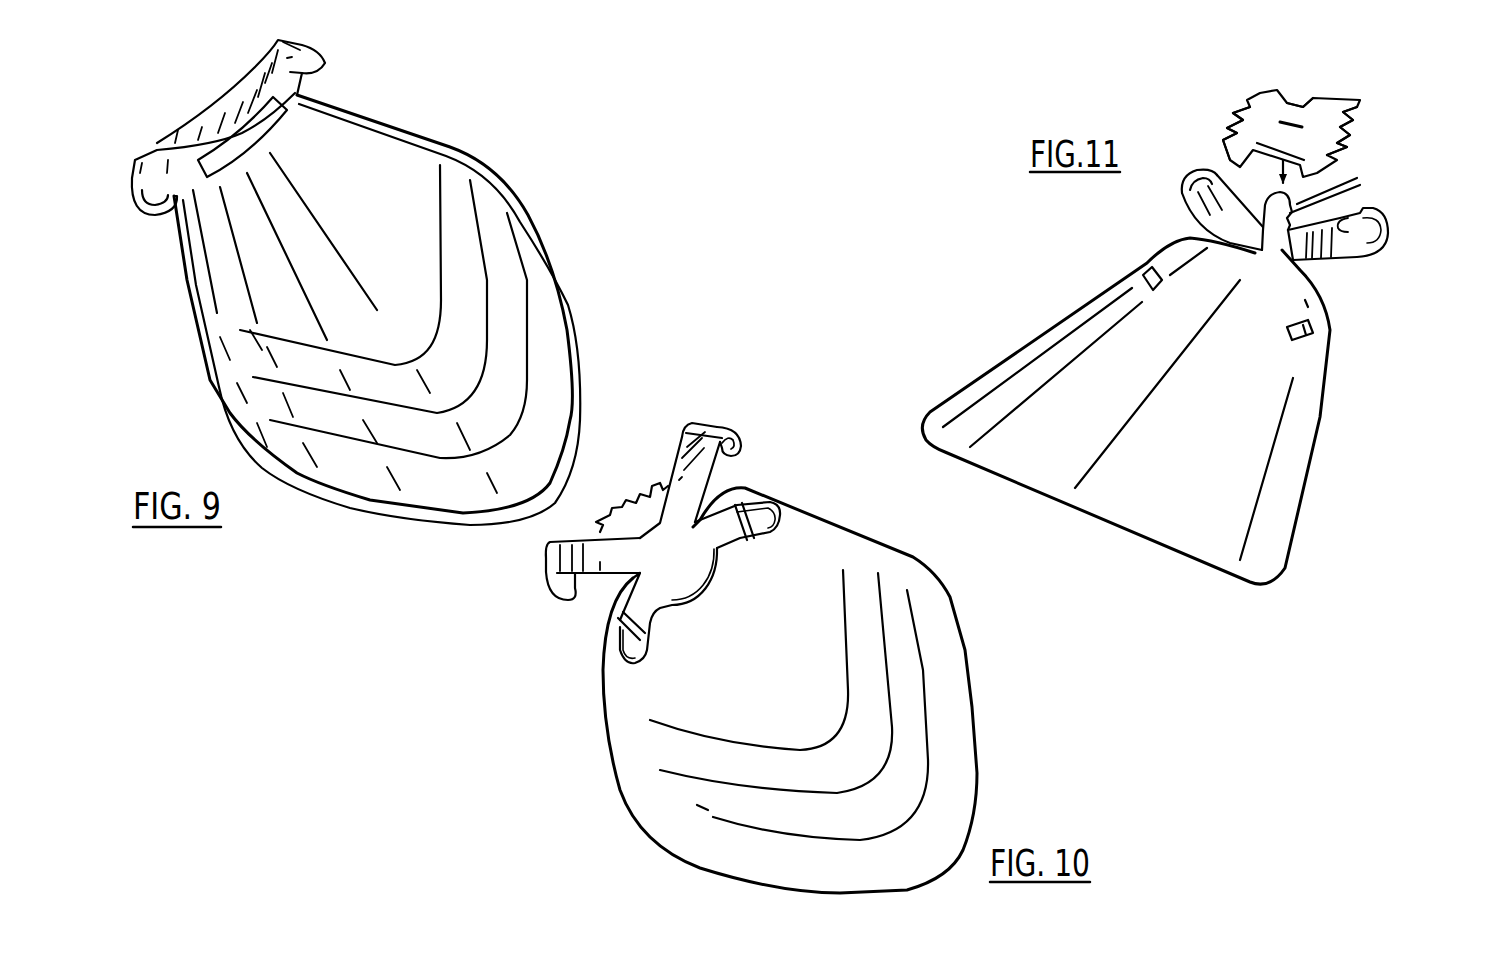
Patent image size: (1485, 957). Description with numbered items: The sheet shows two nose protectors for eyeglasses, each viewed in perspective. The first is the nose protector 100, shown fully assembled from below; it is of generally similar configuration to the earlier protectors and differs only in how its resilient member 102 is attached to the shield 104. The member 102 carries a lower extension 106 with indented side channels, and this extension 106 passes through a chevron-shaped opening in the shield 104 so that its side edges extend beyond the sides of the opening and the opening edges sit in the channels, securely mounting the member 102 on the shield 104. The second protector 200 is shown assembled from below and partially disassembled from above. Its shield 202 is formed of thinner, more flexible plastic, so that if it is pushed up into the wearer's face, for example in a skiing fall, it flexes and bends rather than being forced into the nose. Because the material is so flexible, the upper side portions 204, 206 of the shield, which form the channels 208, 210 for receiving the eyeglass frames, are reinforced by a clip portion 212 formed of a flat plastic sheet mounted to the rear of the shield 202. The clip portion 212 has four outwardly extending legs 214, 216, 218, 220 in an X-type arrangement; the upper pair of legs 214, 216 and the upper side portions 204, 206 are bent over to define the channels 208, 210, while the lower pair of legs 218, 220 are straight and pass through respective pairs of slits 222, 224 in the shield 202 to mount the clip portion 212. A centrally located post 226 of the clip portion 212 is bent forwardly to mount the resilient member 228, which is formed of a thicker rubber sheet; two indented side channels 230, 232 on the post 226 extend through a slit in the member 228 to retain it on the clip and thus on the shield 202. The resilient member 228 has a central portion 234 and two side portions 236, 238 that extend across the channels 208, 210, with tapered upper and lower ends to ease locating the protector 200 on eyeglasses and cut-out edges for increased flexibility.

In FIG. 9, the nose protector 100 is at (385, 282).
In FIG. 9, the resilient member 102 is at (210, 110).
In FIG. 9, the shield 104 is at (580, 388).
In FIG. 9, the lower extension 106 is at (265, 130).
In FIG. 10, the protector 200 is at (767, 634).
In FIG. 11, the protector 200 is at (1191, 313).
In FIG. 10, the shield 202 is at (653, 830).
In FIG. 11, the shield 202 is at (1072, 327).
In FIG. 10, the upper side portion 204 is at (580, 590).
In FIG. 11, the upper side portion 204 is at (1317, 280).
In FIG. 10, the upper side portion 206 is at (713, 473).
In FIG. 11, the upper side portion 206 is at (1200, 220).
In FIG. 10, the channel 208 is at (550, 598).
In FIG. 11, the channel 208 is at (1345, 258).
In FIG. 10, the channel 210 is at (738, 437).
In FIG. 11, the channel 210 is at (1203, 173).
In FIG. 10, the clip portion 212 is at (717, 570).
In FIG. 10, the leg 214 is at (563, 540).
In FIG. 10, the leg 216 is at (713, 423).
In FIG. 10, the leg 218 is at (623, 647).
In FIG. 10, the leg 220 is at (770, 513).
In FIG. 10, the slits 222 is at (653, 643).
In FIG. 11, the slits 222 is at (1310, 327).
In FIG. 10, the slits 224 is at (760, 537).
In FIG. 11, the slits 224 is at (1148, 273).
In FIG. 11, the post 226 is at (1316, 113).
In FIG. 11, the resilient member 228 is at (1263, 93).
In FIG. 11, the indented side channel 230 is at (1267, 207).
In FIG. 11, the indented side channel 232 is at (1303, 210).
In FIG. 11, the central portion 234 is at (1307, 108).
In FIG. 11, the side portion 236 is at (1277, 95).
In FIG. 11, the side portion 238 is at (1343, 100).